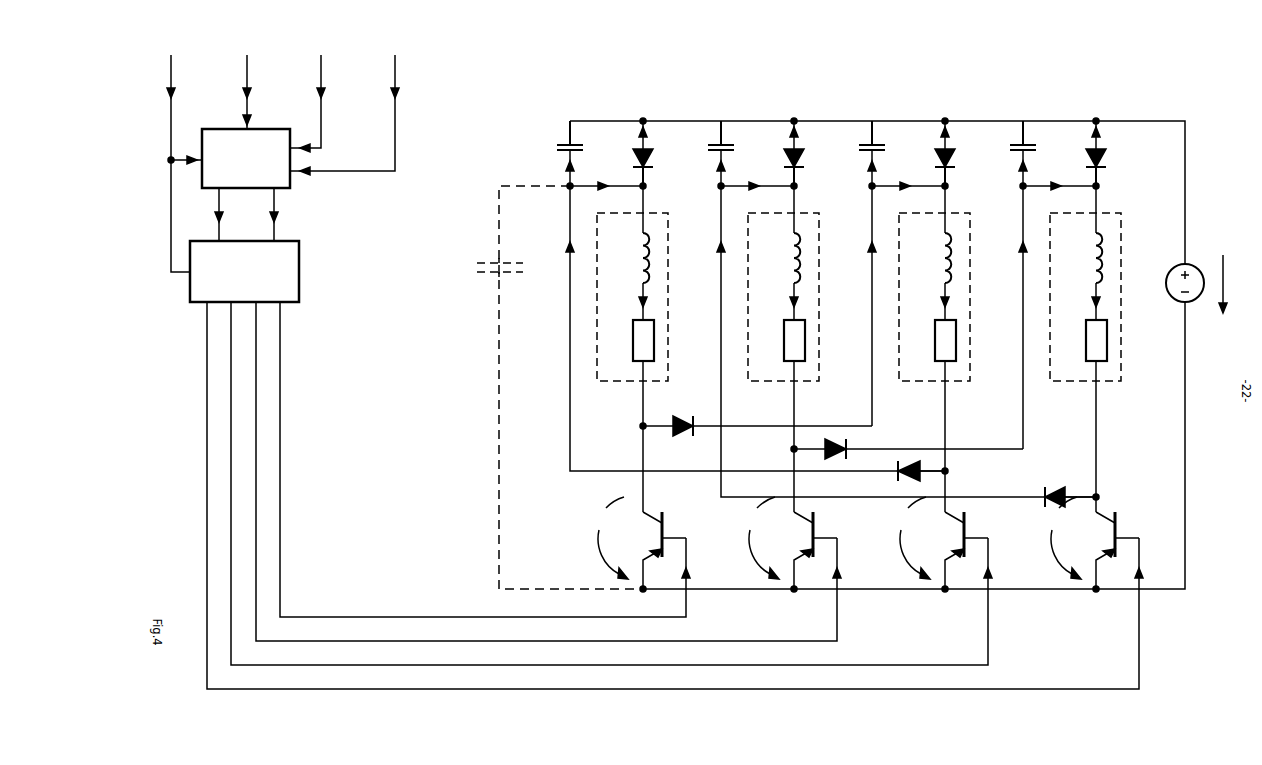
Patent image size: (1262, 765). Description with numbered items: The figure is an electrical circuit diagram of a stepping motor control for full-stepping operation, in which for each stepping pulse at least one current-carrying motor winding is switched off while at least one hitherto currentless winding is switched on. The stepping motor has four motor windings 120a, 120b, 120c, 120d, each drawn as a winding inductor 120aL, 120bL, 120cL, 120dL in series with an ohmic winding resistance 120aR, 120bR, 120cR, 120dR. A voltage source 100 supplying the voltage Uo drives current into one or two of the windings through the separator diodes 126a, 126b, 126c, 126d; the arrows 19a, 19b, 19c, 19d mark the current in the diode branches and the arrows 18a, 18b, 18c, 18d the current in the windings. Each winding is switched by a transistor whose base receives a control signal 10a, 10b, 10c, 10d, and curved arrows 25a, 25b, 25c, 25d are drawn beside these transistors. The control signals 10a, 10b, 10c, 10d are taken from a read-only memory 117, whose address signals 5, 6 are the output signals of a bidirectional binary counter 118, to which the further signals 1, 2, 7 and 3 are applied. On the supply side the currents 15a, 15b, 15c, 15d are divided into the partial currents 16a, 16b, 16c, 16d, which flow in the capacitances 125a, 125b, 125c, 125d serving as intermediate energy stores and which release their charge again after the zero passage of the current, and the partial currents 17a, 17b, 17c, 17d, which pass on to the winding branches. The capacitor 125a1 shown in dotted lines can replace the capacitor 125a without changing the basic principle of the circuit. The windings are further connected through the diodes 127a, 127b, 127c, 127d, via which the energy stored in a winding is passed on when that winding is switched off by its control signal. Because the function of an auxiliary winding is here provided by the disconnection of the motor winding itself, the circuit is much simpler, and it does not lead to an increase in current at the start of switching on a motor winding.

The input line 1 is at (178, 163).
The input line 2 is at (241, 92).
The input line 3 is at (344, 115).
The address signal 5 is at (213, 214).
The address signal 6 is at (268, 214).
The input line 7 is at (307, 103).
The read-only memory 117 is at (244, 271).
The bidirectional binary counter 118 is at (246, 158).
The capacitance 125a is at (557, 135).
The capacitance 125b is at (708, 135).
The capacitance 125c is at (860, 135).
The capacitance 125d is at (1010, 135).
The capacitor 125a1 is at (488, 264).
The partial current 16a is at (557, 169).
The partial current 16b is at (708, 169).
The partial current 16c is at (859, 169).
The partial current 16d is at (1010, 169).
The partial current 17a is at (608, 195).
The partial current 17b is at (759, 195).
The partial current 17c is at (910, 195).
The partial current 17d is at (1061, 195).
The current path 19a is at (630, 133).
The current path 19b is at (781, 133).
The current path 19c is at (933, 133).
The current path 19d is at (1083, 133).
The separator diode 126a is at (627, 167).
The separator diode 126b is at (778, 167).
The separator diode 126c is at (930, 167).
The separator diode 126d is at (1080, 167).
The current 15a is at (742, 328).
The current 15b is at (893, 341).
The current 15c is at (859, 306).
The current 15d is at (1010, 317).
The motor winding 120a is at (631, 308).
The motor winding 120b is at (782, 308).
The motor winding 120c is at (933, 308).
The motor winding 120d is at (1084, 308).
The winding inductor 120aL is at (624, 234).
The winding inductor 120bL is at (775, 234).
The winding inductor 120cL is at (926, 234).
The winding inductor 120dL is at (1077, 234).
The ohmic winding resistance 120aR is at (627, 340).
The ohmic winding resistance 120bR is at (778, 340).
The ohmic winding resistance 120cR is at (929, 340).
The ohmic winding resistance 120dR is at (1080, 340).
The current path 18a is at (632, 301).
The current path 18b is at (783, 301).
The current path 18c is at (935, 301).
The current path 18d is at (1085, 301).
The diode 127a is at (756, 421).
The diode 127b is at (907, 444).
The diode 127c is at (901, 468).
The diode 127d is at (1052, 493).
The control signal 10a is at (653, 552).
The control signal 10b is at (804, 552).
The control signal 10c is at (955, 552).
The control signal 10d is at (1106, 552).
The current flow indication 25a is at (609, 538).
The current flow indication 25b is at (760, 538).
The current flow indication 25c is at (911, 538).
The current flow indication 25d is at (1061, 538).
The voltage source 100 is at (1196, 287).